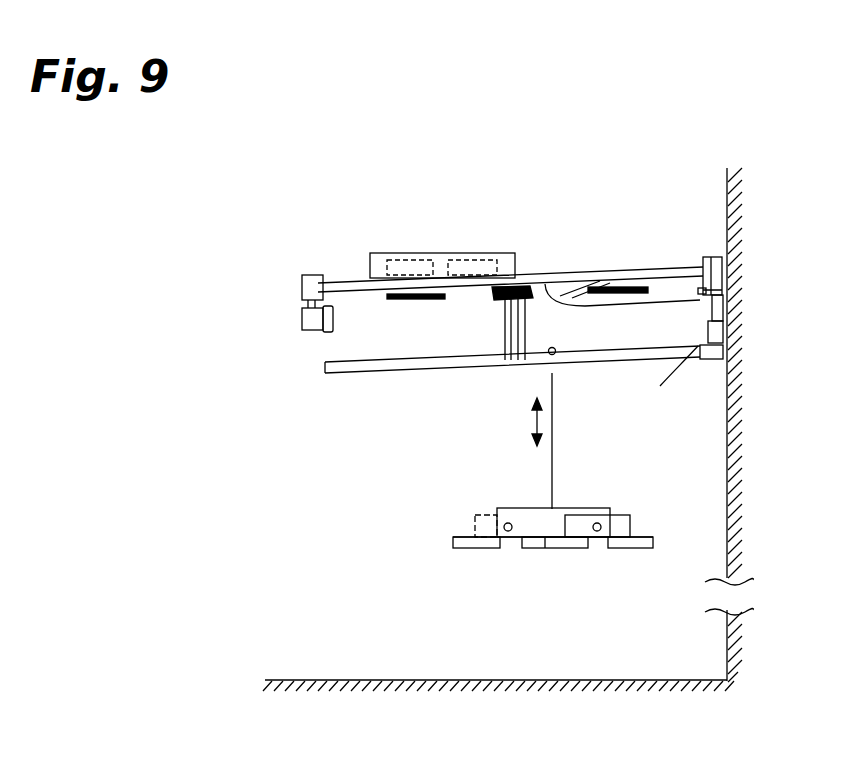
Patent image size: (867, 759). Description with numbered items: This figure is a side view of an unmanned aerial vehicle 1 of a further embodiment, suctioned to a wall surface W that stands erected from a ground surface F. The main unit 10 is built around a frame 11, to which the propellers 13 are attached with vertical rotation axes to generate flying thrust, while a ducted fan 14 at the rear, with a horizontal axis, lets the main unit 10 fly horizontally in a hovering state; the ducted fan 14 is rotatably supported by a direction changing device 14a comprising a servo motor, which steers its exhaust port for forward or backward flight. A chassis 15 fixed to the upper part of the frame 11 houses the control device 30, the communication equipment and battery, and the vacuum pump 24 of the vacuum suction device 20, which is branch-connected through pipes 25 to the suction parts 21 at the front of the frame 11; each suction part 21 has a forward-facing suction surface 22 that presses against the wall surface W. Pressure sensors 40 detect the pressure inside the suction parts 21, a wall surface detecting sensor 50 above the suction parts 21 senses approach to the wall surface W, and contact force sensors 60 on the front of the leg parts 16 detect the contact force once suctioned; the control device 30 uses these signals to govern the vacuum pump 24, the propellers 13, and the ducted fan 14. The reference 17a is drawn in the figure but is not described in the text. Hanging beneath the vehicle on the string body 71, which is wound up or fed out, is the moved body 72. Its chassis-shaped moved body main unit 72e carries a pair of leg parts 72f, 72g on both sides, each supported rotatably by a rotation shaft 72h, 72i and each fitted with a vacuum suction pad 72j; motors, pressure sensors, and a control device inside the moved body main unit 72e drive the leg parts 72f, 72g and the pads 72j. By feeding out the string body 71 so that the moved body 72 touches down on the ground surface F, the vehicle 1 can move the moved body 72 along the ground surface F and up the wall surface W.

The unmanned aerial vehicle 1 is at (640, 191).
The main unit 10 is at (570, 255).
The frame 11 is at (598, 270).
The propellers 13 is at (416, 300).
The ducted fan 14 is at (302, 322).
The direction changing device 14a is at (302, 284).
The chassis 15 is at (370, 262).
The leg parts 16 is at (466, 373).
The pivot pin 17a is at (556, 349).
The vacuum suction device 20 is at (676, 372).
The suction parts 21 is at (728, 325).
The suction surface 22 is at (728, 305).
The vacuum pump 24 is at (472, 253).
The pipes 25 is at (560, 285).
The control device 30 is at (404, 253).
The pressure sensors 40 is at (702, 290).
The wall surface detecting sensor 50 is at (716, 257).
The contact force sensors 60 is at (720, 362).
The string body 71 is at (556, 395).
The moved body 72 is at (445, 498).
The moved body main unit 72e is at (542, 518).
The leg part 72f is at (618, 530).
The leg part 72g is at (476, 520).
The rotation shaft 72h is at (593, 536).
The rotation shaft 72i is at (503, 536).
The vacuum suction pad 72j is at (455, 550).
The wall surface W is at (727, 484).
The ground surface F is at (360, 678).